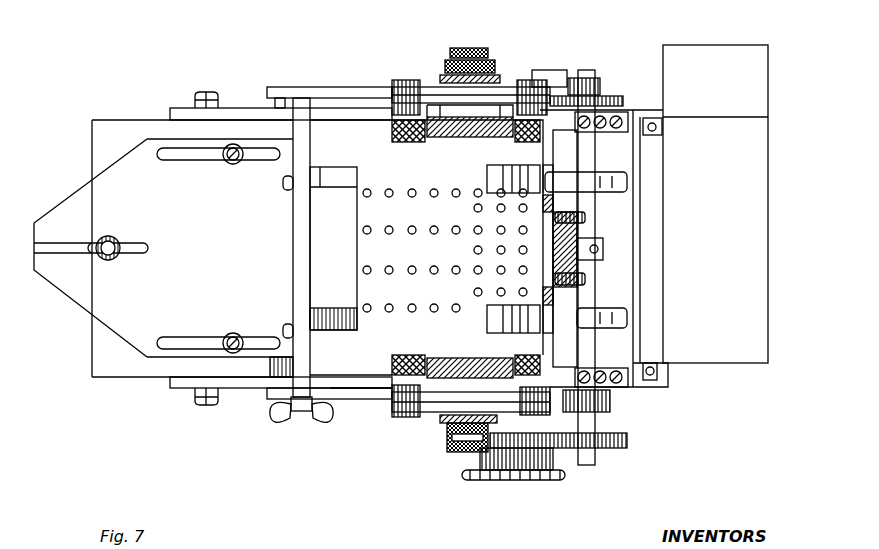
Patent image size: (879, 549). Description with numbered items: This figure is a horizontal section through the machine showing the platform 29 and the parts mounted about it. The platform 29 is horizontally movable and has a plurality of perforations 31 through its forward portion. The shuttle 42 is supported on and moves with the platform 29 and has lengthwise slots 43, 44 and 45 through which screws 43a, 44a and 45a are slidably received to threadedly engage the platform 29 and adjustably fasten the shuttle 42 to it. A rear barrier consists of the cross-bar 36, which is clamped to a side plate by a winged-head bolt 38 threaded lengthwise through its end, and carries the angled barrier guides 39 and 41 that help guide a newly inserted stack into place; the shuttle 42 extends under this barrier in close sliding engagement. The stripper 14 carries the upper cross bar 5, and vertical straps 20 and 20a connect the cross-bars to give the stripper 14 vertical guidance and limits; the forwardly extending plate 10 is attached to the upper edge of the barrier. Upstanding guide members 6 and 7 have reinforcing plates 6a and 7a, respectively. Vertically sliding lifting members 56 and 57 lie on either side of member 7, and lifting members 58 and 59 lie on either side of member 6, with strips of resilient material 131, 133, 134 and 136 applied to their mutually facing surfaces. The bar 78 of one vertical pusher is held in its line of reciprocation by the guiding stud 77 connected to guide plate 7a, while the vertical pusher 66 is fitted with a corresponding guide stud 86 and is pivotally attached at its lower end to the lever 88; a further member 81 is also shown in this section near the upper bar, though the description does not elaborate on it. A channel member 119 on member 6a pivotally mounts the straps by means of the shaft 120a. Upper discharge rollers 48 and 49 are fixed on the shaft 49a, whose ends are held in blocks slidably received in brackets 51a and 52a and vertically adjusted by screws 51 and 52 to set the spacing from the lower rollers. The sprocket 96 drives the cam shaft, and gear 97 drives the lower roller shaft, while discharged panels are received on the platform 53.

The upper cross bar 5 is at (578, 240).
The guide member 6 is at (455, 372).
The reinforcing plate 6a is at (462, 370).
The guide member 7 is at (452, 136).
The reinforcing plate 7a is at (490, 122).
The forwardly extending plate 10 is at (603, 252).
The stripper 14 is at (545, 262).
The vertical strap 20 is at (586, 280).
The vertical strap 20a is at (586, 218).
The supporting platform 29 is at (110, 365).
The perforations 31 is at (408, 312).
The cross-bar 36 is at (293, 252).
The bolt 38 is at (286, 416).
The barrier guide 39 is at (336, 322).
The barrier guide 41 is at (350, 158).
The shuttle 42 is at (72, 205).
The lengthwise slot 43 is at (218, 326).
The screw 43a is at (235, 333).
The lengthwise slot 44 is at (140, 248).
The screw 44a is at (108, 260).
The lengthwise slot 45 is at (205, 158).
The screw 45a is at (234, 164).
The upper roller 48 is at (622, 312).
The upper roller 49 is at (628, 180).
The shaft 49a is at (598, 302).
The screw 51 is at (584, 370).
The bracket 51a is at (636, 372).
The screw 52 is at (600, 128).
The bracket 52a is at (630, 116).
The platform 53 is at (734, 355).
The lifting member 56 is at (395, 125).
The lifting member 57 is at (558, 100).
The lifting member 58 is at (602, 400).
The lifting member 59 is at (394, 392).
The vertical pusher 66 is at (446, 424).
The guiding stud 77 is at (468, 48).
The bar 78 is at (445, 76).
The upper tie bar 81 is at (330, 96).
The vertical guide stud 86 is at (456, 448).
The lever 88 is at (340, 400).
The sprocket 96 is at (562, 478).
The gear 97 is at (627, 440).
The channel member 119 is at (440, 406).
The shaft 120a is at (410, 414).
The resilient strip 131 is at (400, 140).
The resilient strip 133 is at (528, 141).
The resilient strip 134 is at (396, 356).
The resilient strip 136 is at (522, 358).